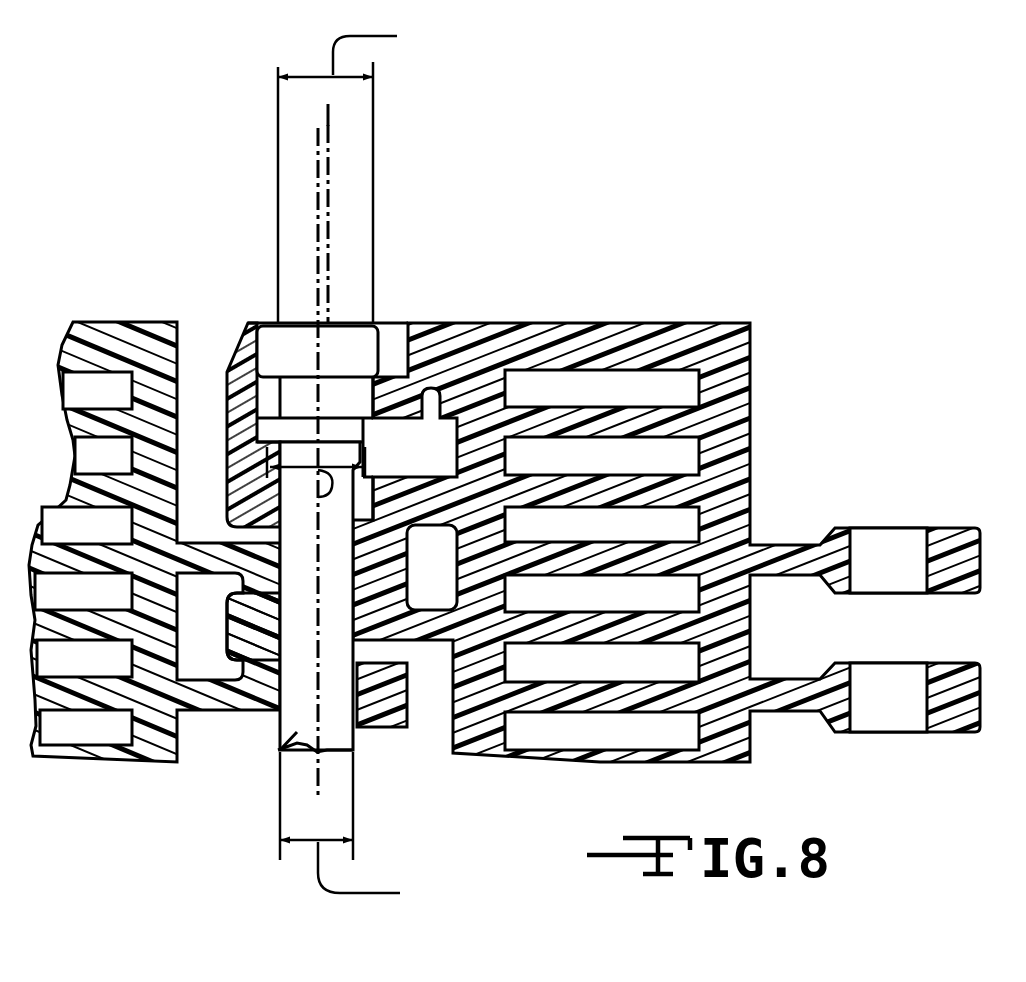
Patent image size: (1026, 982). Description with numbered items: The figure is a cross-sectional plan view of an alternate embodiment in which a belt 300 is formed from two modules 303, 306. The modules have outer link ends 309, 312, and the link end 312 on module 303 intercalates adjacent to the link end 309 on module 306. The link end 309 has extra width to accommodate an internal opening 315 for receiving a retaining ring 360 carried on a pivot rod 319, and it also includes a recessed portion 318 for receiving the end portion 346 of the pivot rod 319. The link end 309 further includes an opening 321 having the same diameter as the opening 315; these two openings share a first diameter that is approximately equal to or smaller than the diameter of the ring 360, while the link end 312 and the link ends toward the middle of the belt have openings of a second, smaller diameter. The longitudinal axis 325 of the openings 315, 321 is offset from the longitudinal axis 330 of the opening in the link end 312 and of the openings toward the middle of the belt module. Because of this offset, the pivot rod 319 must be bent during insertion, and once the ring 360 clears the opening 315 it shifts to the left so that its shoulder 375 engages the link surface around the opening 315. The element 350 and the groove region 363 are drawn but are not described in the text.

The belt 300 is at (677, 230).
The module 303 is at (115, 348).
The module 306 is at (723, 335).
The link end 309 is at (227, 437).
The link end 312 is at (952, 547).
The internal opening 315 is at (333, 483).
The recessed portion 318 is at (405, 353).
The pivot rod 319 is at (293, 733).
The opening 321 is at (383, 500).
The longitudinal axis 325 is at (330, 120).
The longitudinal axis 330 is at (317, 768).
The end portion 346 is at (291, 340).
The nut 350 is at (337, 710).
The retaining ring 360 is at (440, 413).
The groove 363 is at (372, 452).
The shoulder 375 is at (272, 410).